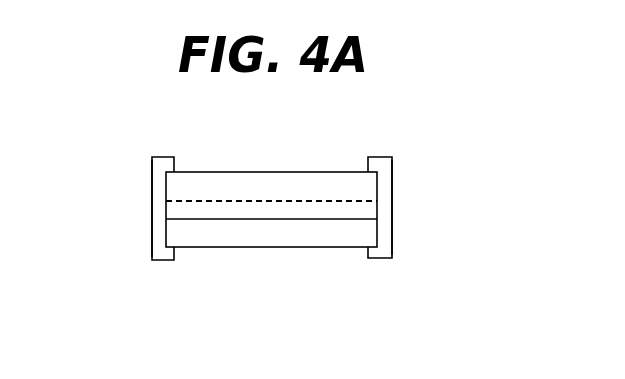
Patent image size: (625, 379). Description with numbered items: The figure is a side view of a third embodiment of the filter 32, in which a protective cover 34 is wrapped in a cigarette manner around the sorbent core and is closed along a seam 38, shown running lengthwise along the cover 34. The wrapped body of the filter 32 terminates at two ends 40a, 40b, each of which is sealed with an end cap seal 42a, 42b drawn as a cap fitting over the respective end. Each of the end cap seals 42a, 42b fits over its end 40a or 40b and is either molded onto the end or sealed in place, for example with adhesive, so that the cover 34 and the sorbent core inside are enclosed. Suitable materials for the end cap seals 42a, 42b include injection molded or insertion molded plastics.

The filter 32 is at (310, 155).
The protective cover 34 is at (263, 232).
The seam 38 is at (333, 186).
The end 40a is at (165, 237).
The end 40b is at (380, 240).
The end cap seal 42a is at (155, 195).
The end cap seal 42b is at (451, 216).